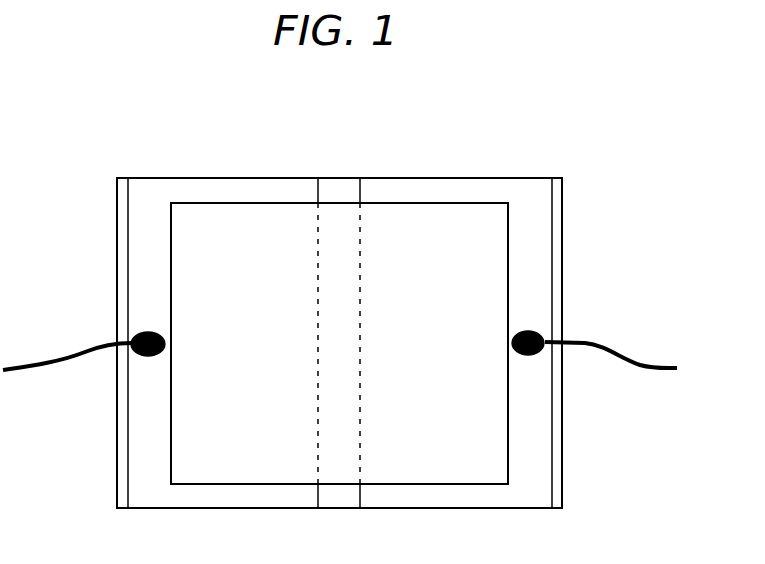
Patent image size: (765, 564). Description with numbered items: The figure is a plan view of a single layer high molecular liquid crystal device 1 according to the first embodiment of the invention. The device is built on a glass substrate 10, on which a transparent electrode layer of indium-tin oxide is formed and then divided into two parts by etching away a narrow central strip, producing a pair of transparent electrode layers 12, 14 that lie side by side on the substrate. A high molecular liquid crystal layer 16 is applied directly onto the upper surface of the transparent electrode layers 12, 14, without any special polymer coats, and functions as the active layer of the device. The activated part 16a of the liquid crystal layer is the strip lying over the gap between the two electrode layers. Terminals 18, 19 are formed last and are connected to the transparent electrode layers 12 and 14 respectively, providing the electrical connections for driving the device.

The high molecular liquid crystal device 1 is at (484, 111).
The glass substrate 10 is at (561, 213).
The transparent electrode layer 12 is at (140, 222).
The transparent electrode layer 14 is at (530, 202).
The high molecular liquid crystal layer 16 is at (425, 213).
The activated part 16a is at (340, 227).
The terminal 18 is at (50, 362).
The terminal 19 is at (633, 367).